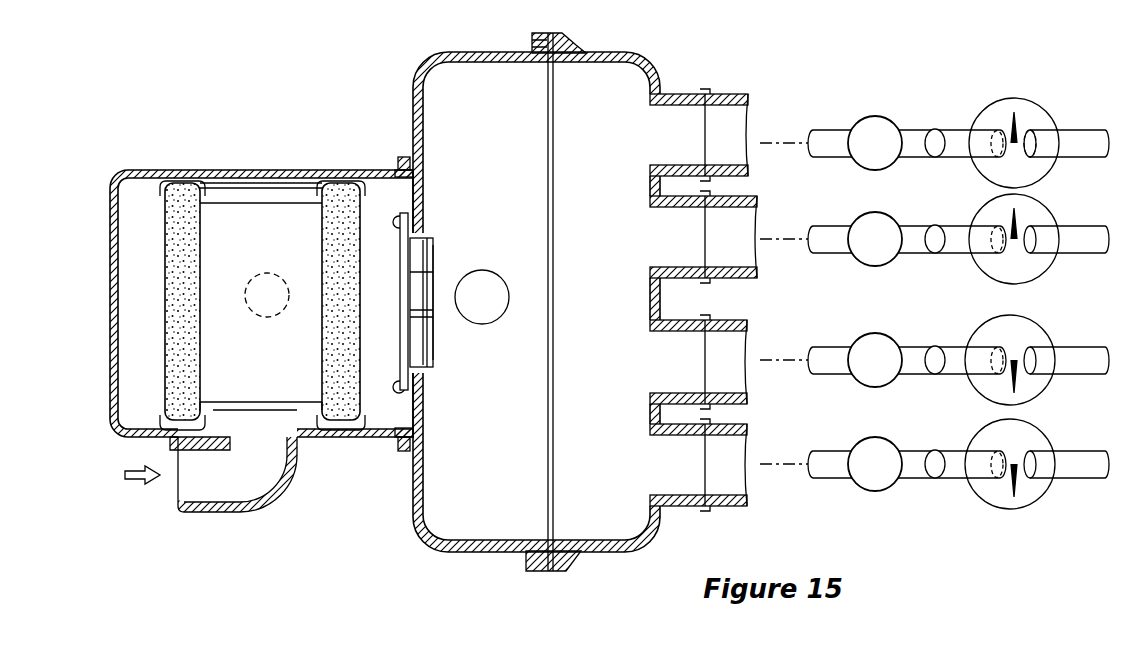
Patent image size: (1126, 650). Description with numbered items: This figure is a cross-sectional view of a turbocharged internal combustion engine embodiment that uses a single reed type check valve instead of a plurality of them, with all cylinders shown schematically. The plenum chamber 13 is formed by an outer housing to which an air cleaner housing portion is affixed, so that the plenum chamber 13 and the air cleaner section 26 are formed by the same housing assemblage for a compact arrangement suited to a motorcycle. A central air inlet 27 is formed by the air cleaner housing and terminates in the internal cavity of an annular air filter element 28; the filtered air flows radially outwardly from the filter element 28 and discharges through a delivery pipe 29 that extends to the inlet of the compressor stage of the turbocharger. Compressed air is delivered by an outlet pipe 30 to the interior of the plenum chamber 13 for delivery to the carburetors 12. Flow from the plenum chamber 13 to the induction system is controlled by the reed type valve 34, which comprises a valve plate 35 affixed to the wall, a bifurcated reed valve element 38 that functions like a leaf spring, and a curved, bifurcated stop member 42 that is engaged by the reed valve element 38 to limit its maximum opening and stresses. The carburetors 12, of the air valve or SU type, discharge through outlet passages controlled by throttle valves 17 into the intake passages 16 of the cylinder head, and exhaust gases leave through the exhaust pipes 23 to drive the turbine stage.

The carburetor 12 is at (870, 489).
The plenum chamber 13 is at (625, 82).
The intake passage 16 is at (950, 484).
The throttle valve 17 is at (934, 480).
The exhaust pipe 23 is at (1085, 478).
The air cleaner section 26 is at (236, 160).
The central air inlet 27 is at (187, 488).
The annular air filter element 28 is at (178, 192).
The delivery pipe 29 is at (254, 318).
The outlet pipe 30 is at (478, 324).
The reed type valve 34 is at (432, 200).
The valve plate 35 is at (405, 305).
The reed valve element 38 is at (435, 272).
The stop member 42 is at (420, 252).